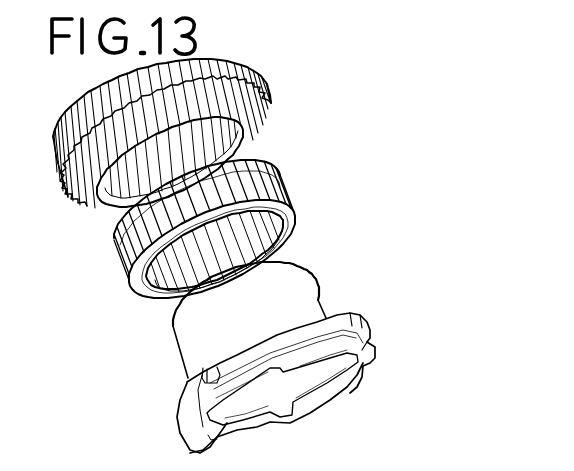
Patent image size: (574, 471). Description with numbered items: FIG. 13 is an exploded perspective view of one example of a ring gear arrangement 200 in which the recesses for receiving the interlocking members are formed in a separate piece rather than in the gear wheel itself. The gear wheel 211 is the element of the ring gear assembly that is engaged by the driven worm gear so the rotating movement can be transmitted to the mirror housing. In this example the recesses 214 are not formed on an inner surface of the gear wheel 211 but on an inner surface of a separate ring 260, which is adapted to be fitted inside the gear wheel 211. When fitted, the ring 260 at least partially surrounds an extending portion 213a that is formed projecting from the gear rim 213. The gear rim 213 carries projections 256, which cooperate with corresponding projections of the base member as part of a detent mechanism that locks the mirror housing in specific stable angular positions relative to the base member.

The clutch assembly 200 is at (92, 267).
The gear wheel 211 is at (264, 97).
The ring 260 is at (275, 190).
The recesses 214 is at (281, 258).
The extending portion 213a is at (192, 343).
The gear rim 213 is at (186, 405).
The projections 256 is at (347, 392).